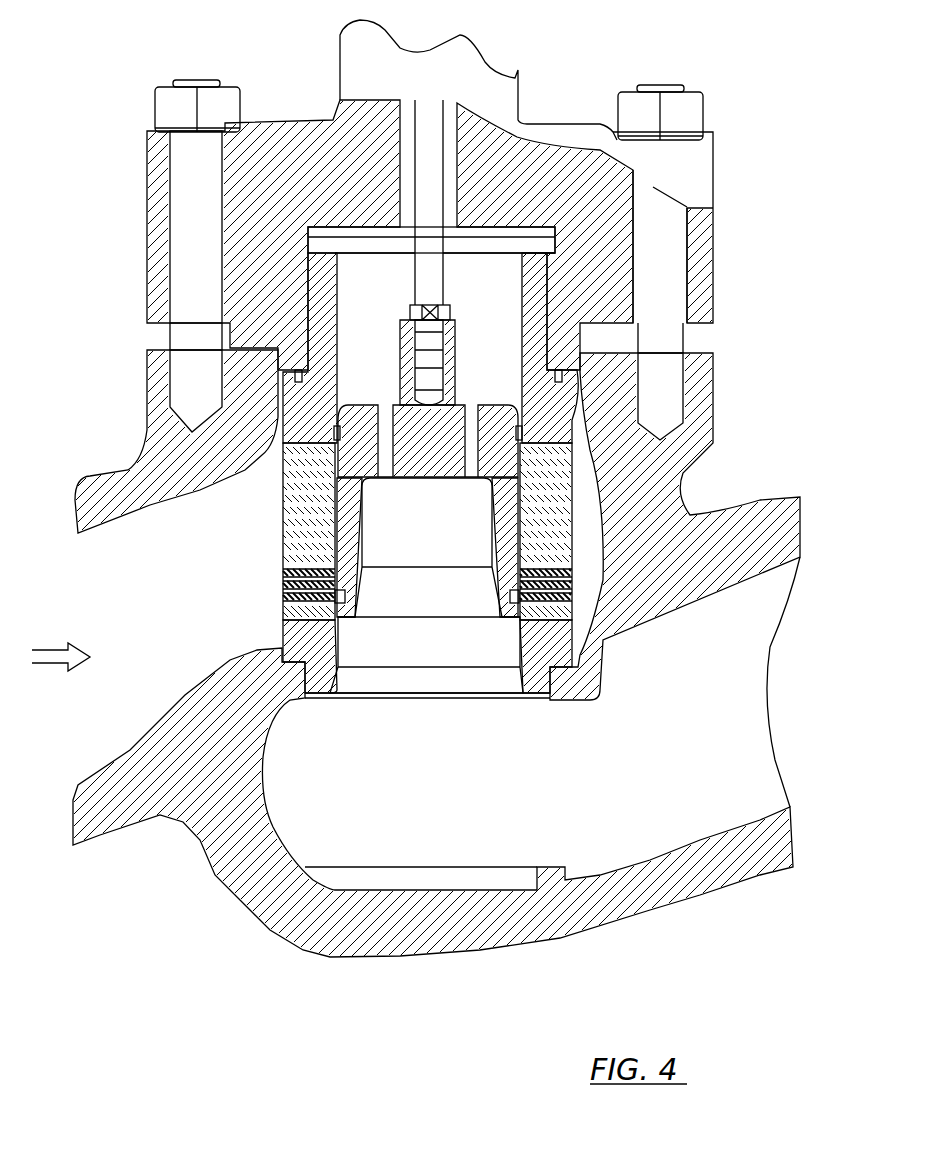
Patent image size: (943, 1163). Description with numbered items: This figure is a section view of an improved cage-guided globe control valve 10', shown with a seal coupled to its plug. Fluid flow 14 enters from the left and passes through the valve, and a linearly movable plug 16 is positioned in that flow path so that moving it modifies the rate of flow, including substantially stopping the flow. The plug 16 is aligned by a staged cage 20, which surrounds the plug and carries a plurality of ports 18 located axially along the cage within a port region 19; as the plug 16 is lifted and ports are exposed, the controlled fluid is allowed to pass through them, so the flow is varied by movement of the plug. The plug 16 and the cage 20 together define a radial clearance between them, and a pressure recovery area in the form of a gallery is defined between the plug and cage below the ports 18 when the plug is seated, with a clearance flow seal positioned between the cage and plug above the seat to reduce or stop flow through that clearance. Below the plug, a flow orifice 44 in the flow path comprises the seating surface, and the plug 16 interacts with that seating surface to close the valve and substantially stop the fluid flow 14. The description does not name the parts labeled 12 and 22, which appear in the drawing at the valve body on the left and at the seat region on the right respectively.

The cage-guided globe control valve 10' is at (179, 1025).
The valve body 12 is at (118, 470).
The fluid flow 14 is at (56, 668).
The plug 16 is at (492, 530).
The ports 18 is at (575, 530).
The port region 19 is at (587, 567).
The staged cage 20 is at (527, 368).
The seat ring 22 is at (560, 640).
The flow orifice 44 is at (403, 698).